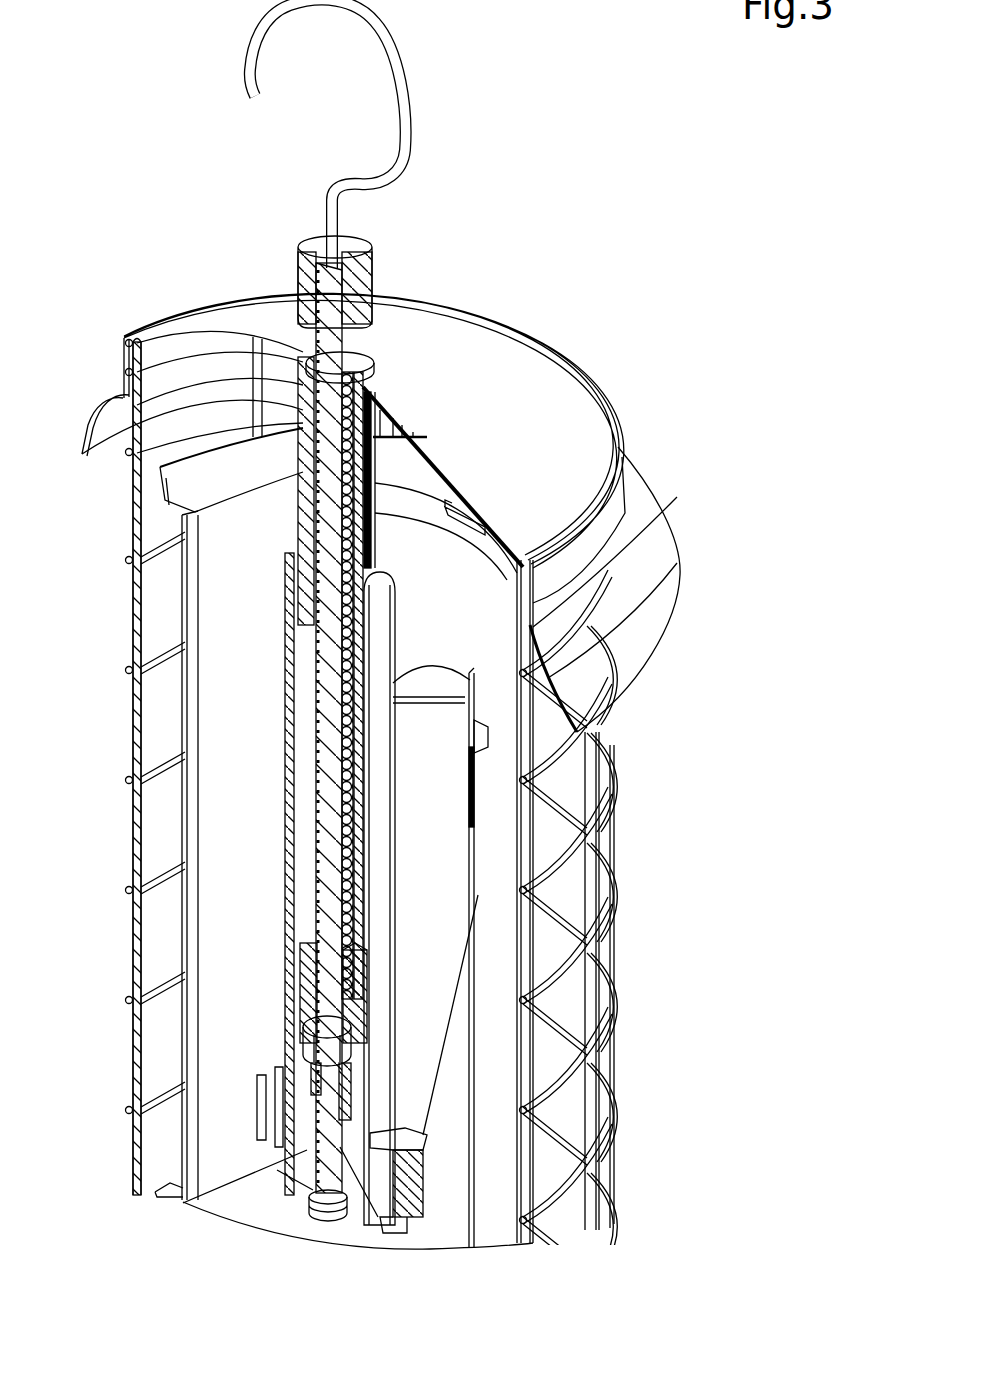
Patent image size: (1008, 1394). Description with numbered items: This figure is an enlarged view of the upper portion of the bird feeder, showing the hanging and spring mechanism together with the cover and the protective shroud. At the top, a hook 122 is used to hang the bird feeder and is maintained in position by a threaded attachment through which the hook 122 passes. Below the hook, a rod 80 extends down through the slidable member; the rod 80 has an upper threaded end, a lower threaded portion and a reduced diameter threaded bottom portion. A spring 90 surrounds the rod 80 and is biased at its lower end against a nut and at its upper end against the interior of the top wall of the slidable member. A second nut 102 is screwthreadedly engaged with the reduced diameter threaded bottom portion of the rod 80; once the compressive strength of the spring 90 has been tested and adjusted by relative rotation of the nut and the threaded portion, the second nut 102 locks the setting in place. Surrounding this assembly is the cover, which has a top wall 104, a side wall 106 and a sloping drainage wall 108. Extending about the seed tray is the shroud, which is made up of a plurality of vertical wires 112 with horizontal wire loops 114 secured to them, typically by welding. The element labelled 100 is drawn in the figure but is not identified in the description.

The rod 80 is at (330, 712).
The spring 90 is at (348, 817).
The base 100 is at (307, 1142).
The second nut 102 is at (310, 1213).
The top wall 104 is at (528, 413).
The side wall 106 is at (578, 594).
The sloping drainage wall 108 is at (625, 647).
The vertical wires 112 is at (133, 932).
The horizontal wire loops 114 is at (157, 865).
The hook 122 is at (408, 93).